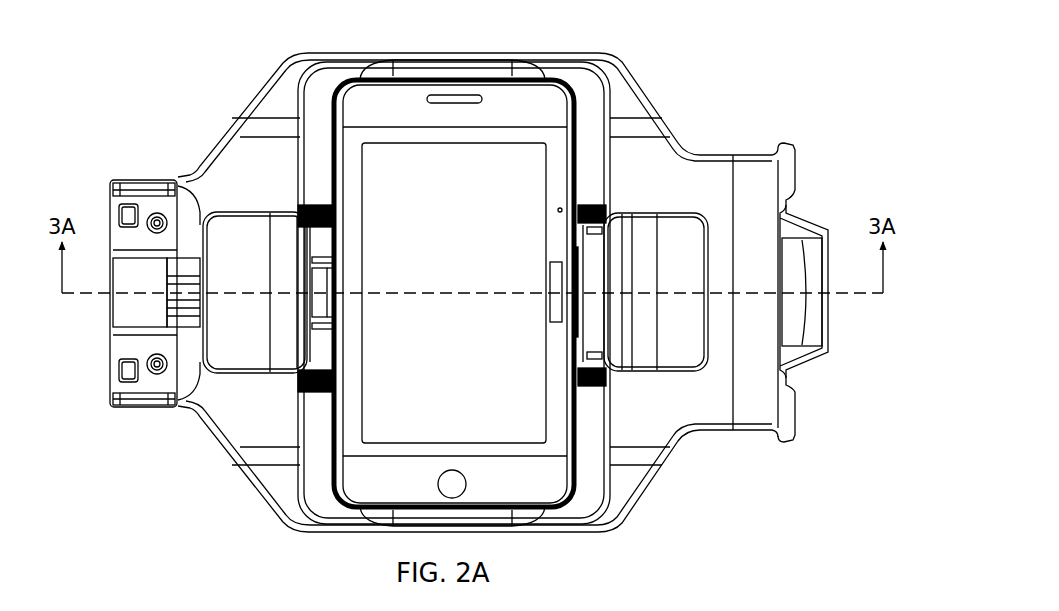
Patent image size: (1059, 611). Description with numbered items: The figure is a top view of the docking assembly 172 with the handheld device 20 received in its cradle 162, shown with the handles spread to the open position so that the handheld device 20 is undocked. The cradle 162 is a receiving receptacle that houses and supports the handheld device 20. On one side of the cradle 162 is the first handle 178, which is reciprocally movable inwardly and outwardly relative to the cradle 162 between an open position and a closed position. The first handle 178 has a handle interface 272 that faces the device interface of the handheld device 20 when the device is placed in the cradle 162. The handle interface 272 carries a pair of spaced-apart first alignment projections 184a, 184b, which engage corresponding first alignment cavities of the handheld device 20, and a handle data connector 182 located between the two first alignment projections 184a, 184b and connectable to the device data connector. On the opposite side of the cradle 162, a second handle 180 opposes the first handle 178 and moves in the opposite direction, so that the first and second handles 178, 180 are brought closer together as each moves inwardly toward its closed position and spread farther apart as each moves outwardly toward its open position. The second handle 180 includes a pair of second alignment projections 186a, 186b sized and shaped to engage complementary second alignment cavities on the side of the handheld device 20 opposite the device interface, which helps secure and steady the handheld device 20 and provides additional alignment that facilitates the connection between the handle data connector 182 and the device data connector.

The handheld device 20 is at (543, 104).
The docking assembly 172 is at (728, 73).
The cradle 162 is at (575, 506).
The first handle 178 is at (239, 236).
The second handle 180 is at (675, 353).
The handle data connector 182 is at (312, 299).
The first alignment projection 184a is at (322, 335).
The first alignment projection 184b is at (323, 252).
The second alignment projection 186a is at (601, 363).
The second alignment projection 186b is at (601, 222).
The handle interface 272 is at (296, 303).